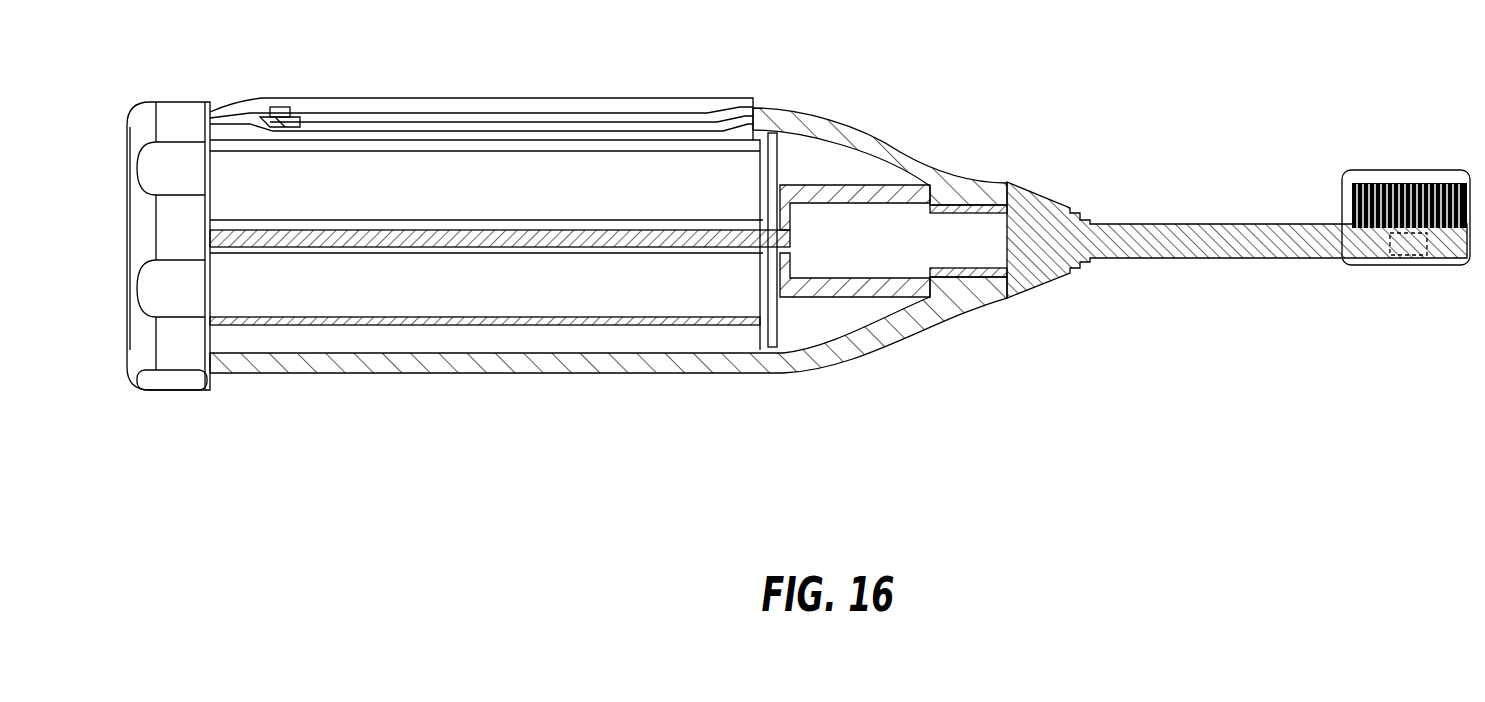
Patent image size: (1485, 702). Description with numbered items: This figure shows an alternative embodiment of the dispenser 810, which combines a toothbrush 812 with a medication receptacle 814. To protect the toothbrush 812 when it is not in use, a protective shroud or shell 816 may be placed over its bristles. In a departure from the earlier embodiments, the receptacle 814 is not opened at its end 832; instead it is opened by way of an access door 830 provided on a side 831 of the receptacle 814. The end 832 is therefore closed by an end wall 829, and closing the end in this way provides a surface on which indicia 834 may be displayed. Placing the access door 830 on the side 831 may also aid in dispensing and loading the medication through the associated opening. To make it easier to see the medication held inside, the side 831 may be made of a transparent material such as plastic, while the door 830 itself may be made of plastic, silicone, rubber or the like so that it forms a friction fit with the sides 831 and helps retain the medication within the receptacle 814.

The dispenser 810 is at (627, 60).
The toothbrush 812 is at (1045, 232).
The medication receptacle 814 is at (334, 165).
The protective shroud or shell 816 is at (1410, 170).
The end wall 829 is at (133, 310).
The access door 830 is at (760, 90).
The side 831 is at (763, 107).
The end 832 is at (219, 381).
The indicia 834 is at (125, 163).